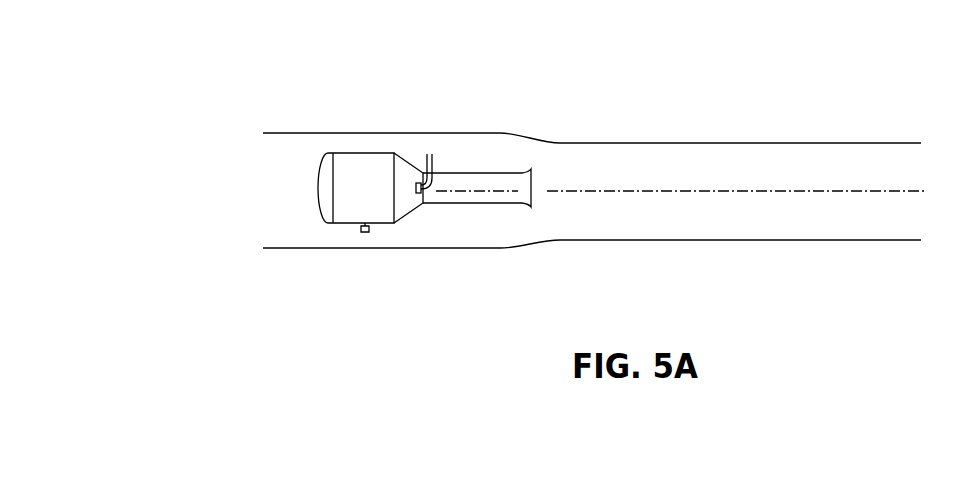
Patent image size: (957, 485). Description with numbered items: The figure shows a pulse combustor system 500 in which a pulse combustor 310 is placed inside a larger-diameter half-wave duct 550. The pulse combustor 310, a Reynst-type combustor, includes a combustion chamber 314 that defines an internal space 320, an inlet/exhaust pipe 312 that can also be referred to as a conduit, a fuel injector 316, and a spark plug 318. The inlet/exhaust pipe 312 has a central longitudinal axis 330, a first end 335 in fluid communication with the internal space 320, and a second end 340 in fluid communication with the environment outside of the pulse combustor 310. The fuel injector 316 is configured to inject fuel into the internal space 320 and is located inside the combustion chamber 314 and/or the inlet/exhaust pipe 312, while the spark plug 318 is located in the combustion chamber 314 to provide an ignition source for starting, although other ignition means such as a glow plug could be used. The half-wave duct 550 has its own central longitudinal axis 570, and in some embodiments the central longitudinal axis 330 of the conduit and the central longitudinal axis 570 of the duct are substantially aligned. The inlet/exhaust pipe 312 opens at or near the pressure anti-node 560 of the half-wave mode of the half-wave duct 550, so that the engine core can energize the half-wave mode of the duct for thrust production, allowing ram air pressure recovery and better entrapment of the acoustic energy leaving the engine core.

The pulse combustor system 500 is at (232, 127).
The pulse combustor 310 is at (276, 204).
The inlet/exhaust pipe 312 is at (480, 173).
The combustion chamber 314 is at (357, 153).
The fuel injector 316 is at (425, 168).
The spark plug 318 is at (365, 232).
The internal space 320 is at (358, 200).
The central longitudinal axis 330 is at (473, 193).
The first end 335 is at (428, 203).
The second end 340 is at (530, 202).
The half-wave duct 550 is at (568, 142).
The pressure anti-node 560 is at (527, 126).
The central longitudinal axis 570 is at (737, 193).